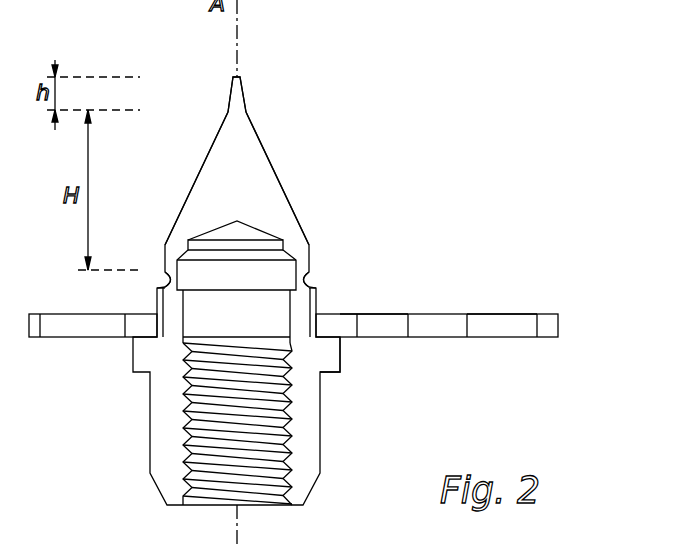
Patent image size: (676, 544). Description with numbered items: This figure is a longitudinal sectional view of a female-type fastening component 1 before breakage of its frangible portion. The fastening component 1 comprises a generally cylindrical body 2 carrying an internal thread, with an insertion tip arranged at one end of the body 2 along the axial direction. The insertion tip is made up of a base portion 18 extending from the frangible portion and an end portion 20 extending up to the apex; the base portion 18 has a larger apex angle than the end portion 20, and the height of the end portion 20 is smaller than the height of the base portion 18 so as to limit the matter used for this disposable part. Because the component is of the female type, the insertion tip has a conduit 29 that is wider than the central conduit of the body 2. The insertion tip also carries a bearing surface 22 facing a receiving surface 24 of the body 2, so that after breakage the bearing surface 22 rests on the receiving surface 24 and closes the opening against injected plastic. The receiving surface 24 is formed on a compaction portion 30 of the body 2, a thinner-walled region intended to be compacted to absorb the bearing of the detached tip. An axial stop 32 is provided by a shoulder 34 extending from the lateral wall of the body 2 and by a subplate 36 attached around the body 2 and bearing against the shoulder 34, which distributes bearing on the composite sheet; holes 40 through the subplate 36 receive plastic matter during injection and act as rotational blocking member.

The fastening component 1 is at (470, 176).
The body 2 is at (302, 445).
The base portion 18 is at (198, 167).
The end portion 20 is at (233, 93).
The bearing surface 22 is at (326, 276).
The receiving surface 24 is at (330, 288).
The conduit 29 is at (243, 270).
The compaction portion 30 is at (175, 316).
The axial stop 32 is at (340, 313).
The shoulder 34 is at (332, 356).
The subplate 36 is at (549, 323).
The holes 40 is at (502, 326).